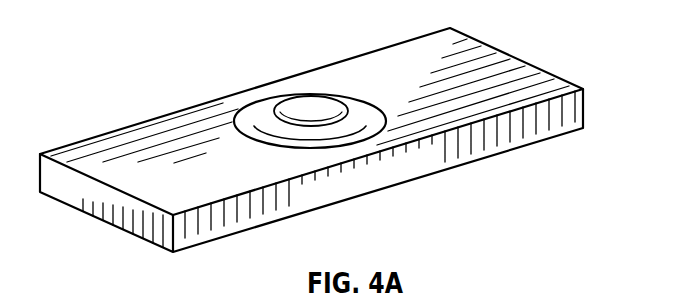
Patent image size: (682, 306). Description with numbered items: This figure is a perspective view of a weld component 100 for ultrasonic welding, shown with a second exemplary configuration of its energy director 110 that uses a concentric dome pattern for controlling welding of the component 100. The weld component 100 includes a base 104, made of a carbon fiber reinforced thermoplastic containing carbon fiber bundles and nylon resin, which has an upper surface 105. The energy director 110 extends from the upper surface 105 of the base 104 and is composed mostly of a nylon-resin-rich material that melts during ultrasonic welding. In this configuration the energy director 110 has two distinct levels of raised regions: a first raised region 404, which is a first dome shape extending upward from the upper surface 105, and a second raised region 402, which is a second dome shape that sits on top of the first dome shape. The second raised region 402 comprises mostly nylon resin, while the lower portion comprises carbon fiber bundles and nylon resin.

The weld component 100 is at (97, 39).
The base 104 is at (565, 117).
The upper surface 105 is at (97, 149).
The energy director 110 is at (255, 102).
The second raised region 402 is at (317, 113).
The first raised region 404 is at (362, 118).